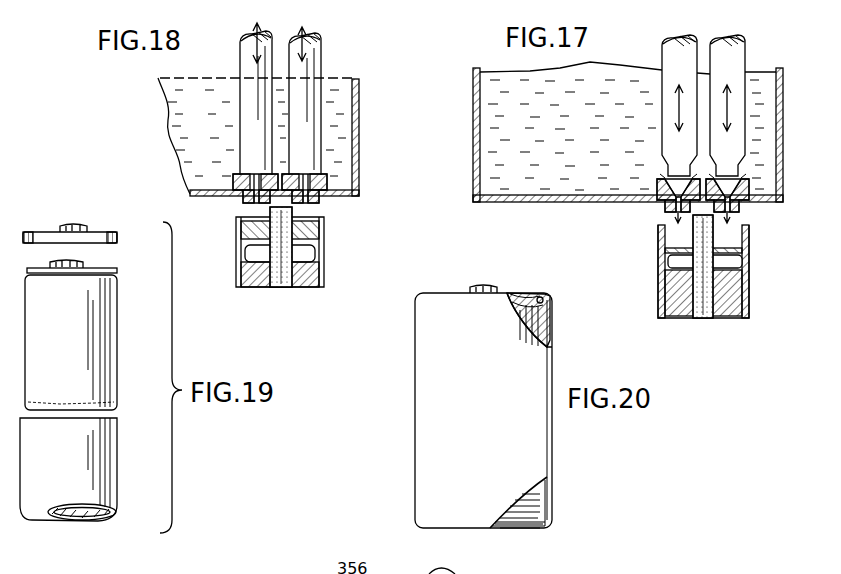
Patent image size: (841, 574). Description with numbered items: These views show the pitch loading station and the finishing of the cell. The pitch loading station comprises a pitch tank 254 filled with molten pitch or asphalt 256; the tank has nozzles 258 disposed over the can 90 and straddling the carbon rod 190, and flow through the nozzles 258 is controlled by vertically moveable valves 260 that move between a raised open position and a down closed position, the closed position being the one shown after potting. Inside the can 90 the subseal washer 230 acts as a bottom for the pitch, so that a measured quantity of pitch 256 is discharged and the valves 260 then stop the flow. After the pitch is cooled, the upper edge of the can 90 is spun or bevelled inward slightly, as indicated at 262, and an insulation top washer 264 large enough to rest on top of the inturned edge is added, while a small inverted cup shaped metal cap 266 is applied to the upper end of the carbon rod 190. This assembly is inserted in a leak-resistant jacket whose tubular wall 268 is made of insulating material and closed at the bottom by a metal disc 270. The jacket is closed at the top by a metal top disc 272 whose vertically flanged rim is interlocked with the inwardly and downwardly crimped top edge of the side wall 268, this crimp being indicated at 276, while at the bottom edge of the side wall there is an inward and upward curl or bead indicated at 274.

In FIG. 18, the pitch tank 254 is at (360, 101).
In FIG. 17, the pitch tank 254 is at (783, 106).
In FIG. 17, the molten pitch 256 is at (603, 78).
In FIG. 18, the vertically moveable valves 260 is at (299, 36).
In FIG. 17, the vertically moveable valves 260 is at (723, 45).
In FIG. 17, the nozzles 258 is at (657, 208).
In FIG. 17, the subseal washer 230 is at (760, 241).
In FIG. 17, the can 90 is at (731, 280).
In FIG. 19, the can 90 is at (94, 342).
In FIG. 20, the can 90 is at (525, 503).
In FIG. 17, the carbon rod 190 is at (705, 316).
In FIG. 19, the metal top disc 272 is at (53, 222).
In FIG. 20, the metal top disc 272 is at (537, 305).
In FIG. 20, the inward and downward curl of the top edge 276 is at (548, 297).
In FIG. 19, the inturned upper edge of the can 262 is at (117, 280).
In FIG. 20, the inturned upper edge of the can 262 is at (528, 320).
In FIG. 19, the insulation top washer 264 is at (113, 268).
In FIG. 19, the metal cap 266 is at (58, 260).
In FIG. 19, the tubular wall 268 is at (118, 447).
In FIG. 20, the tubular wall 268 is at (552, 452).
In FIG. 20, the inward and upward curl of the bottom edge 274 is at (547, 528).
In FIG. 20, the metal disc 270 is at (525, 533).